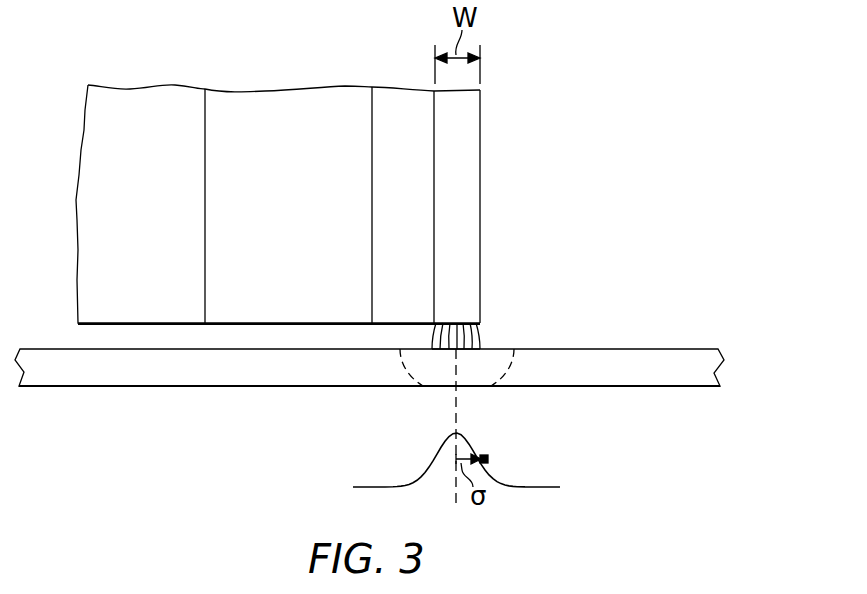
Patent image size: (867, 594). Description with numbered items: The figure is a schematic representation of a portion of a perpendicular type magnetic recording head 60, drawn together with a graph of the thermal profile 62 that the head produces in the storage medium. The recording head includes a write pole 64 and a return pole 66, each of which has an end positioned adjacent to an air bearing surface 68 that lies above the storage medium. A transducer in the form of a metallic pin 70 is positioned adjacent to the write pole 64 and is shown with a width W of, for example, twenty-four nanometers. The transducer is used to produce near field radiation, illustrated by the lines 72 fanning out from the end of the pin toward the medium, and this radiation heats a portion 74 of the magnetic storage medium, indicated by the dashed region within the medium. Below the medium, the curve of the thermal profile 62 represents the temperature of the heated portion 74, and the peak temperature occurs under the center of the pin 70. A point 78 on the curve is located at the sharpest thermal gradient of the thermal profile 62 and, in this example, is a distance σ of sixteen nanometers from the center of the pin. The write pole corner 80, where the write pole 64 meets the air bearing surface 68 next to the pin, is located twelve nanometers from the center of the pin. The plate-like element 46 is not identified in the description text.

The substrate 46 is at (692, 360).
The perpendicular type magnetic recording head 60 is at (579, 159).
The thermal profile 62 is at (532, 487).
The write pole 64 is at (388, 165).
The return pole 66 is at (96, 198).
The air bearing surface 68 is at (111, 324).
The metallic pin 70 is at (480, 240).
The near field radiation lines 72 is at (478, 338).
The heated portion of magnetic storage medium 74 is at (427, 372).
The point of sharpest thermal gradient 78 is at (489, 459).
The write pole corner 80 is at (433, 323).